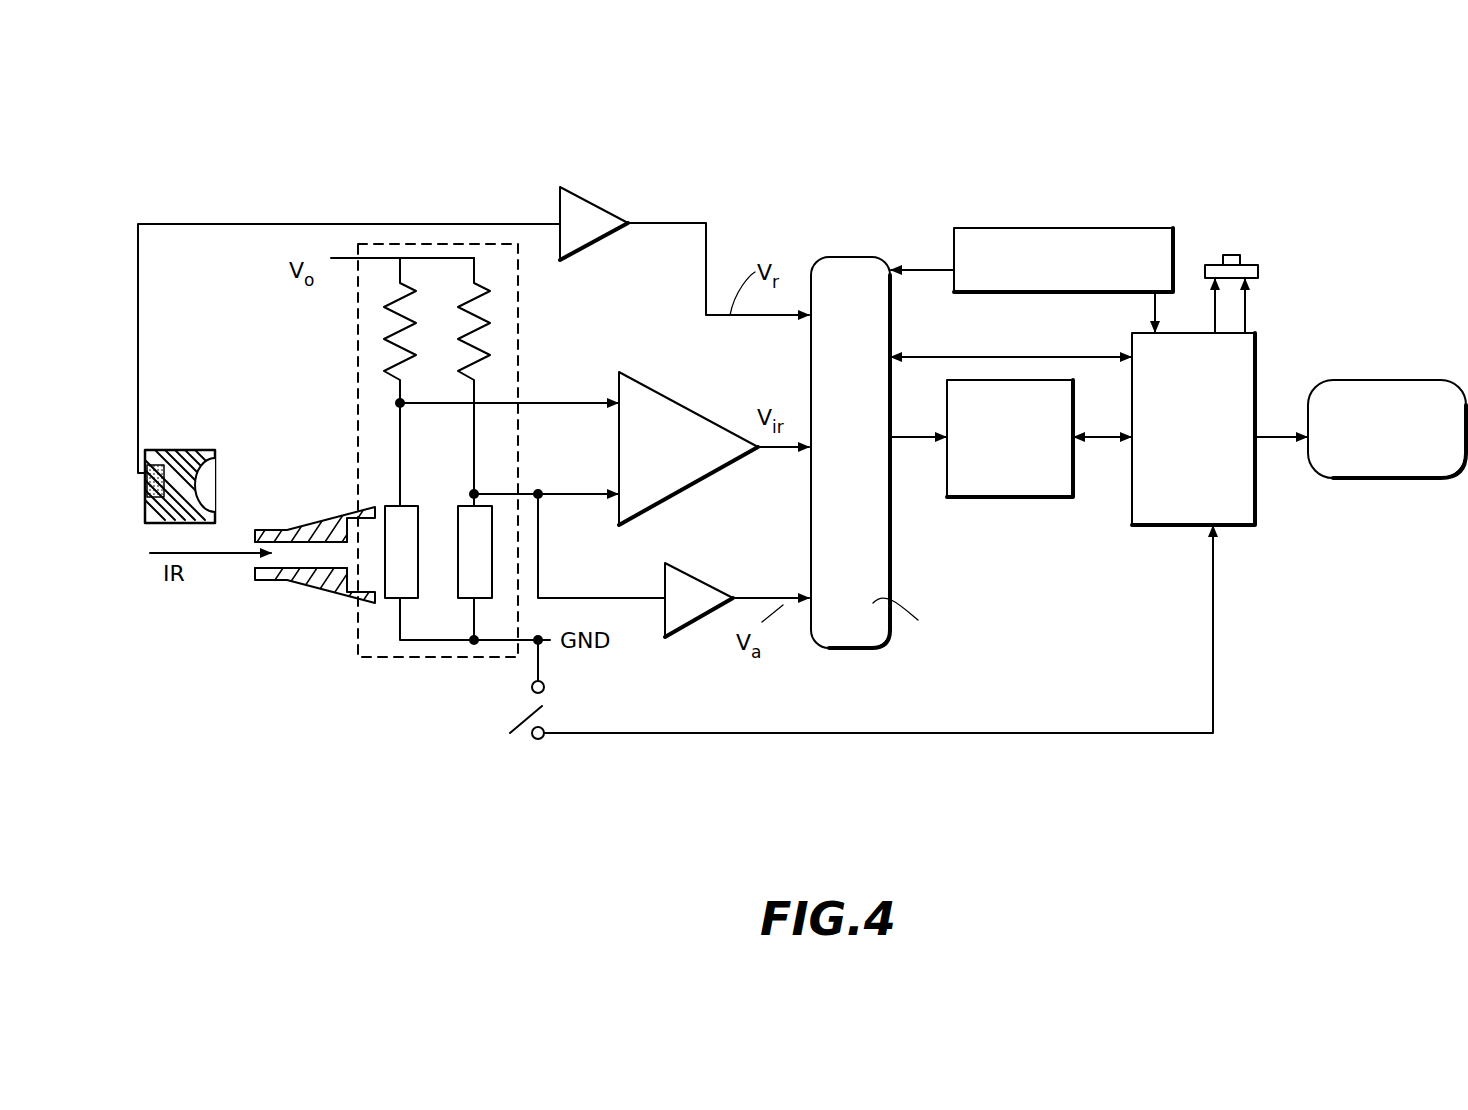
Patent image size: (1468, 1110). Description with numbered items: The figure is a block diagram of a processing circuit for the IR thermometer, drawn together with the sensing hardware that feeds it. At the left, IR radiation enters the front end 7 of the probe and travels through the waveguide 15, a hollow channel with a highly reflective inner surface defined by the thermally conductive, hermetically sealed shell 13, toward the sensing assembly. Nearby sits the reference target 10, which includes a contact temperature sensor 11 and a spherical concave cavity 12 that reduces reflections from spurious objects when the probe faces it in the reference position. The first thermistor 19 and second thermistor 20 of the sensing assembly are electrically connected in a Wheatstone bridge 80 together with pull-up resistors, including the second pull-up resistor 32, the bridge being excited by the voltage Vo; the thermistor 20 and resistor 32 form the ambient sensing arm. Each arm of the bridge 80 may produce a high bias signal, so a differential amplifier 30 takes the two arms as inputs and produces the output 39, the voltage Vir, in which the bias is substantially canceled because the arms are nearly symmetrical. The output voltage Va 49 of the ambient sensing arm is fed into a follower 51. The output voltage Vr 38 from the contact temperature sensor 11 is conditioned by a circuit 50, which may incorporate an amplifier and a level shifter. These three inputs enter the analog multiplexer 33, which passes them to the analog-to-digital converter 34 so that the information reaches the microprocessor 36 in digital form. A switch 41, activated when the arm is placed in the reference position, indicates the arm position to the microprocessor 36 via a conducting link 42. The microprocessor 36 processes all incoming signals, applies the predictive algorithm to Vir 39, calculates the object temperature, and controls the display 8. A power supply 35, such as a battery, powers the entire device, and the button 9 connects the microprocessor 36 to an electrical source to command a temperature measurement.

The front end 7 is at (250, 568).
The display 8 is at (1427, 460).
The button 9 is at (1242, 268).
The reference target 10 is at (187, 470).
The contact temperature sensor 11 is at (385, 310).
The cavity 12 is at (205, 483).
The shell 13 is at (335, 528).
The waveguide 15 is at (321, 585).
The first thermistor 19 is at (392, 585).
The second thermistor 20 is at (468, 575).
The differential amplifier 30 is at (650, 395).
The second pull-up resistor 32 is at (493, 358).
The analog multiplexer 33 is at (853, 275).
The analog-to-digital converter 34 is at (998, 497).
The power supply 35 is at (1143, 235).
The microprocessor 36 is at (1180, 495).
The output voltage Vr 38 is at (370, 224).
The output Vir 39 is at (783, 457).
The switch 41 is at (548, 706).
The conducting link 42 is at (885, 733).
The output voltage Va 49 is at (587, 598).
The conditioning circuit 50 is at (581, 212).
The follower 51 is at (680, 578).
The Wheatstone bridge 80 is at (465, 244).